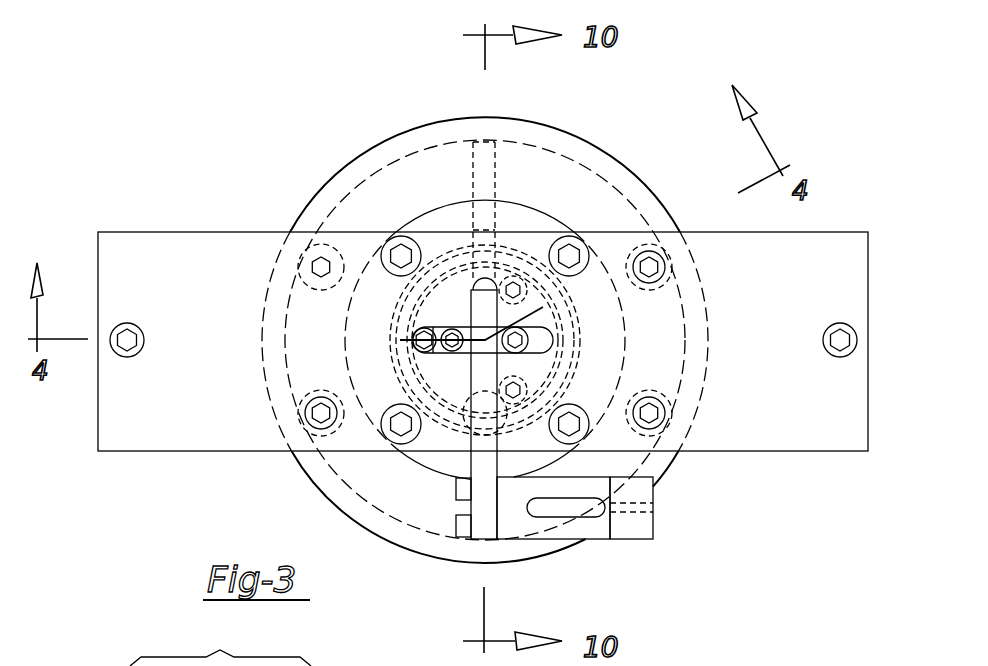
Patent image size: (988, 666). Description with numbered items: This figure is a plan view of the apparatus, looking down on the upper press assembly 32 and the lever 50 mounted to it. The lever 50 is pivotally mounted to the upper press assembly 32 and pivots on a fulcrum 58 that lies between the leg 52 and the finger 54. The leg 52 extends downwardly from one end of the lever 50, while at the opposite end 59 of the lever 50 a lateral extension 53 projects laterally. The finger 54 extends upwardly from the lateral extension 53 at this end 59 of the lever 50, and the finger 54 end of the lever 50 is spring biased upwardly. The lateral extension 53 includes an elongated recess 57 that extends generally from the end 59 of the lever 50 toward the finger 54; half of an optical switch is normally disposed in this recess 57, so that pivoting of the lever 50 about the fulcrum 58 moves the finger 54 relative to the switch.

The upper press assembly 32 is at (704, 221).
The lever 50 is at (460, 465).
The leg 52 is at (487, 271).
The lateral extension 53 is at (531, 540).
The finger 54 is at (634, 540).
The recess 57 is at (590, 505).
The fulcrum 58 is at (460, 327).
The end 59 is at (481, 540).